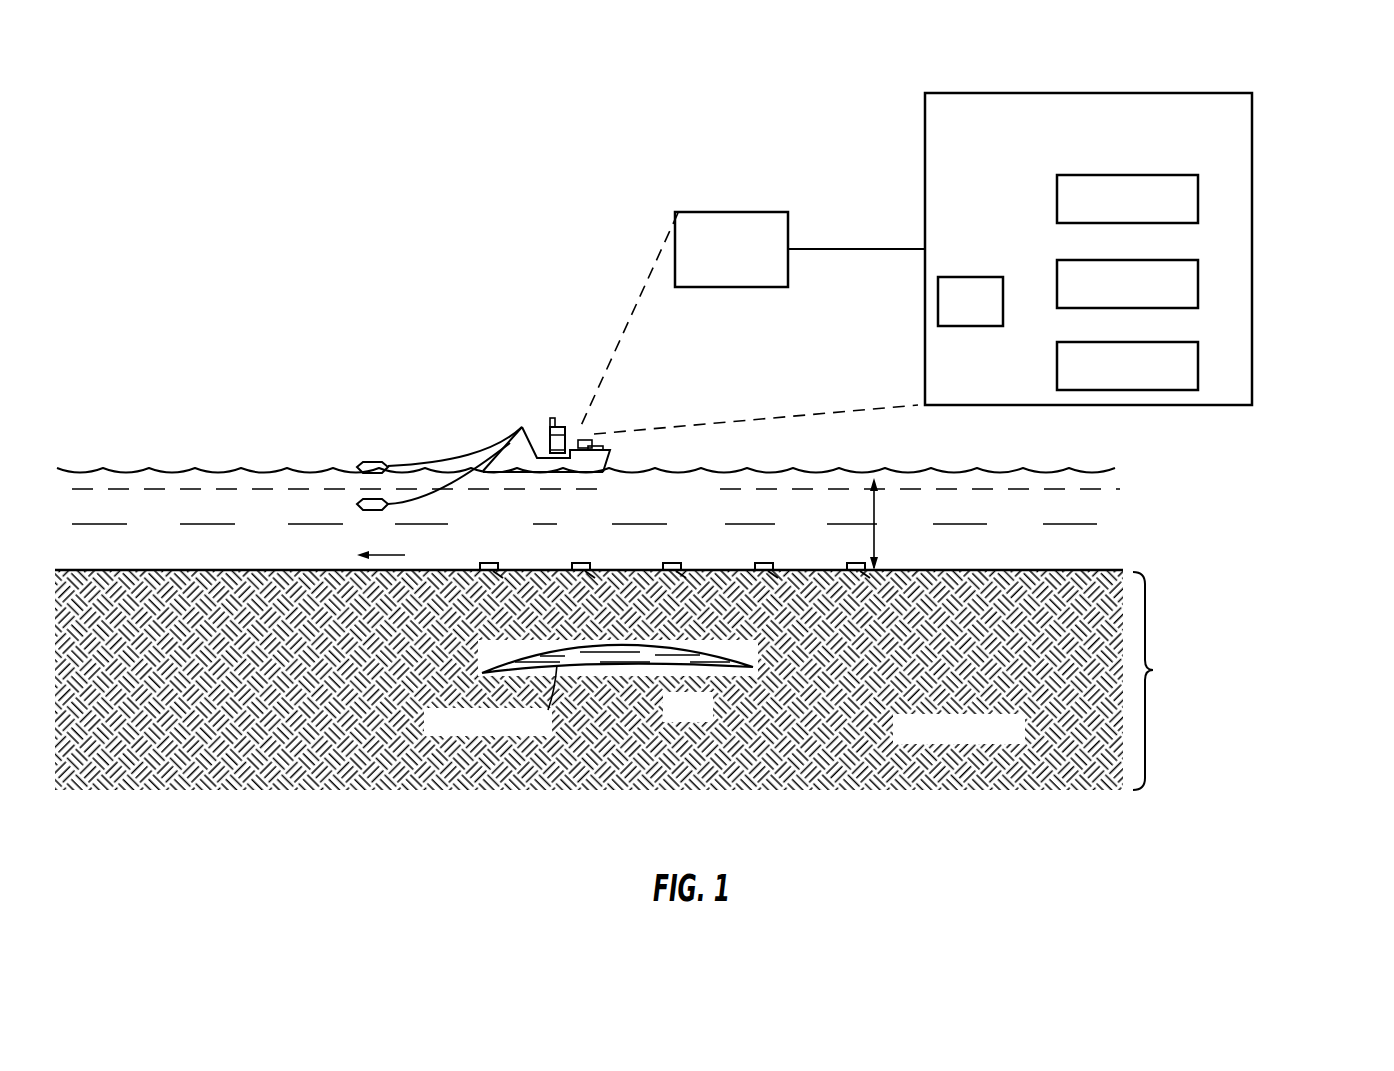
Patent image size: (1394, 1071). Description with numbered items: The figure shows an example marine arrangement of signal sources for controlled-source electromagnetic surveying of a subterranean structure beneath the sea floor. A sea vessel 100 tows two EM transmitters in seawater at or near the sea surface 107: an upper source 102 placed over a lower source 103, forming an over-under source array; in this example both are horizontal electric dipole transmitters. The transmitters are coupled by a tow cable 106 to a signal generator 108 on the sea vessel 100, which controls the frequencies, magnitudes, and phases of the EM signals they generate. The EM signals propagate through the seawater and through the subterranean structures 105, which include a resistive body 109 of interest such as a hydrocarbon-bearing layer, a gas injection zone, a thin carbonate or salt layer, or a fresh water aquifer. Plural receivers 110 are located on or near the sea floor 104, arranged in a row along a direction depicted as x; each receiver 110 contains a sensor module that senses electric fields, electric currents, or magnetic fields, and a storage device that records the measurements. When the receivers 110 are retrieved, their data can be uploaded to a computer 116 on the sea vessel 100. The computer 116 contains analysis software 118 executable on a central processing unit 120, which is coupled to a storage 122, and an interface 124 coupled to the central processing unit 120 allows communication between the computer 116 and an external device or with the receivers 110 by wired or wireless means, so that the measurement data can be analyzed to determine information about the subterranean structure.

The sea vessel 100 is at (618, 453).
The upper source 102 is at (370, 461).
The lower source 103 is at (358, 502).
The sea floor 104 is at (967, 570).
The subterranean structures 105 is at (1153, 670).
The tow cable 106 is at (506, 433).
The sea surface 107 is at (126, 470).
The signal generator 108 is at (700, 211).
The resistive body 109 is at (655, 665).
The receivers 110 is at (572, 563).
The computer 116 is at (924, 140).
The analysis software 118 is at (1198, 181).
The central processing unit 120 is at (1198, 287).
The storage 122 is at (1198, 353).
The interface 124 is at (937, 298).